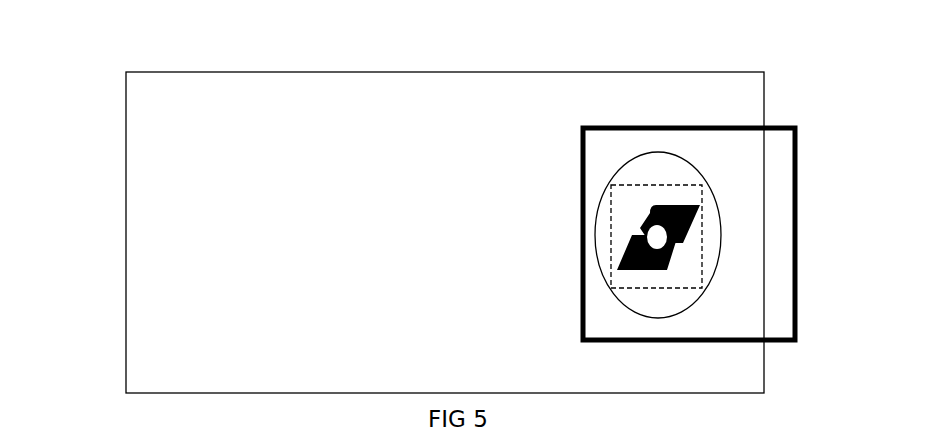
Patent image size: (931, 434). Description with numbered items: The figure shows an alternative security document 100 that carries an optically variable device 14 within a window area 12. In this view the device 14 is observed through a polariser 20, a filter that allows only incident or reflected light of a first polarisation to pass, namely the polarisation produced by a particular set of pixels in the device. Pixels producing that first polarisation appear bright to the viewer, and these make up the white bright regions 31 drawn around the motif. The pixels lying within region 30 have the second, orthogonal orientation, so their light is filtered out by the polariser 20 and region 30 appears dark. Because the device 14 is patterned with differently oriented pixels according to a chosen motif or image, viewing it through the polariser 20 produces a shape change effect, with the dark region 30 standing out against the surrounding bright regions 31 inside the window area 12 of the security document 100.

The security document 100 is at (126, 190).
The polariser 20 is at (592, 126).
The window area 12 is at (658, 152).
The optically variable device 14 is at (626, 185).
The region 30 is at (625, 247).
The bright regions 31 is at (682, 193).